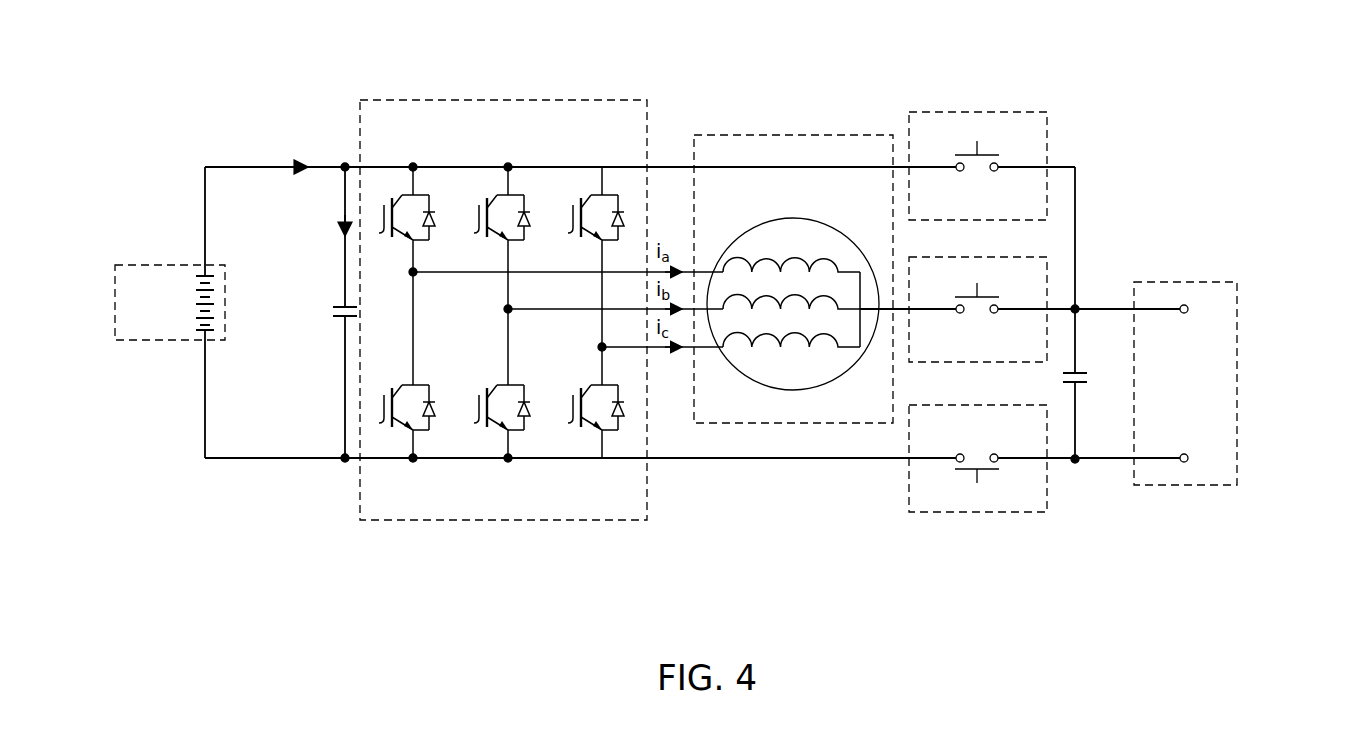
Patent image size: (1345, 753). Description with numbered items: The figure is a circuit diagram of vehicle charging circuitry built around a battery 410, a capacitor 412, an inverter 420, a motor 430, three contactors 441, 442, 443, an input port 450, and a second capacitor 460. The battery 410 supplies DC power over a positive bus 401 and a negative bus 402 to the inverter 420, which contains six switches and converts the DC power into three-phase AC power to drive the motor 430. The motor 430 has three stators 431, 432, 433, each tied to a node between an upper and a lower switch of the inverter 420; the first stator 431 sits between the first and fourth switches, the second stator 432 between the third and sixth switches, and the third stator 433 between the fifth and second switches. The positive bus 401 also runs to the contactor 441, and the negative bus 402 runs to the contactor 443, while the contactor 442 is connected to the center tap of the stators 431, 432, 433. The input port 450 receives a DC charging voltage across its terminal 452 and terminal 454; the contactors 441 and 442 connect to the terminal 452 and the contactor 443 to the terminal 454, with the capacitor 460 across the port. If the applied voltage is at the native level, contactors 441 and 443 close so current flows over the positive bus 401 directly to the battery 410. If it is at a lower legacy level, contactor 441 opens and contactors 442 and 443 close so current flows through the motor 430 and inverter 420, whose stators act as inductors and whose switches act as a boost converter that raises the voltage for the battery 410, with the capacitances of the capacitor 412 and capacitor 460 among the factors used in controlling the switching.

The positive bus 401 is at (266, 162).
The negative bus 402 is at (265, 462).
The battery 410 is at (147, 263).
The capacitor 412 is at (335, 322).
The inverter 420 is at (494, 99).
The motor 430 is at (788, 299).
The stator 431 is at (800, 258).
The stator 432 is at (740, 296).
The stator 433 is at (797, 334).
The contactor 441 is at (985, 111).
The contactor 442 is at (1047, 287).
The contactor 443 is at (985, 512).
The input port 450 is at (1229, 386).
The terminal 452 is at (1184, 303).
The terminal 454 is at (1184, 464).
The capacitor 460 is at (1082, 385).